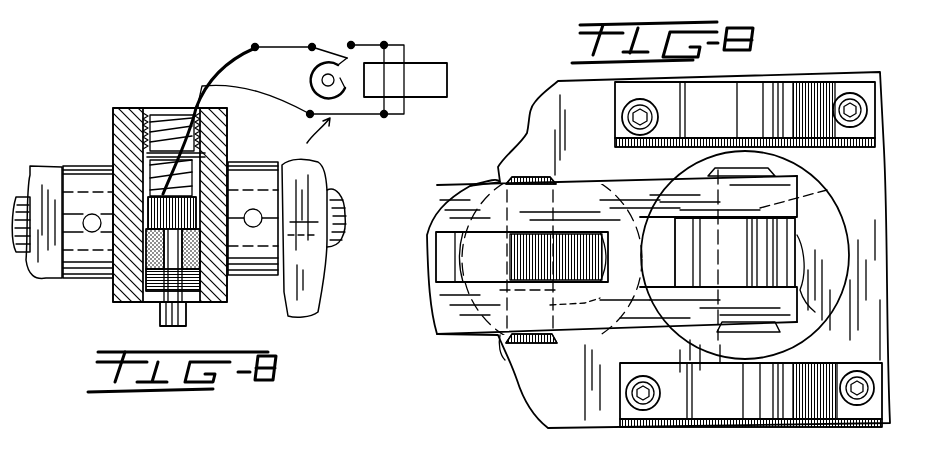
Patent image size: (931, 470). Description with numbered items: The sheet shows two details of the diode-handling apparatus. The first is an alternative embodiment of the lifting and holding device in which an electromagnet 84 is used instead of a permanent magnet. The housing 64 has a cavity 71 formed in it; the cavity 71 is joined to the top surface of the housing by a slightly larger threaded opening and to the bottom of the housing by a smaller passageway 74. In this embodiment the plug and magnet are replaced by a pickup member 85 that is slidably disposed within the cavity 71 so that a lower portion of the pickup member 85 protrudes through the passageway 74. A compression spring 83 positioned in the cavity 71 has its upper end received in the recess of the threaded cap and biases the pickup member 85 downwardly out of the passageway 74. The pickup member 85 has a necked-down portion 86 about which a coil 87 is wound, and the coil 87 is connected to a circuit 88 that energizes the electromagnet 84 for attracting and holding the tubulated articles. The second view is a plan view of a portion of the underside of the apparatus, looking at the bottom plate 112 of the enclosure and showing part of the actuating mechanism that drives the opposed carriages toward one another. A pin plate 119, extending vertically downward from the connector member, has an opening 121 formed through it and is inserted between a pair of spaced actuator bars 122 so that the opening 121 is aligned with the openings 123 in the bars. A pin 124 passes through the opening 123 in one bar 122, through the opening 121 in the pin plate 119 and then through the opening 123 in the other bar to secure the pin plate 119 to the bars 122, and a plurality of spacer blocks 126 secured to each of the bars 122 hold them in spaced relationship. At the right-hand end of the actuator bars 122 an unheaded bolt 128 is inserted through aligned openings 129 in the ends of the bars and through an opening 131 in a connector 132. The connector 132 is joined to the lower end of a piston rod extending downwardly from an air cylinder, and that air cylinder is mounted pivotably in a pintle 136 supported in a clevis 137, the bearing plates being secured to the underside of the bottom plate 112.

In FIG. 8, the housing 64 is at (118, 126).
In FIG. 8, the compression spring 83 is at (158, 113).
In FIG. 8, the cavity 71 is at (200, 165).
In FIG. 8, the circuit 88 is at (350, 96).
In FIG. 8, the necked-down portion 86 is at (116, 280).
In FIG. 8, the electromagnet 84 is at (143, 282).
In FIG. 8, the passageway 74 is at (160, 312).
In FIG. 8, the pickup member 85 is at (186, 331).
In FIG. 8, the coil 87 is at (238, 283).
In FIG. 9, the bottom plate 112 is at (545, 90).
In FIG. 9, the actuator bars 122 is at (488, 185).
In FIG. 9, the spacer blocks 126 is at (470, 186).
In FIG. 9, the pin plate 119 is at (611, 255).
In FIG. 9, the opening 121 is at (505, 260).
In FIG. 9, the openings 123 is at (663, 255).
In FIG. 9, the pin 124 is at (542, 343).
In FIG. 9, the unheaded bolt 128 is at (715, 185).
In FIG. 9, the aligned openings 129 is at (752, 255).
In FIG. 9, the opening 131 is at (793, 250).
In FIG. 9, the connector 132 is at (722, 372).
In FIG. 9, the pintle 136 is at (718, 138).
In FIG. 9, the clevis 137 is at (822, 92).